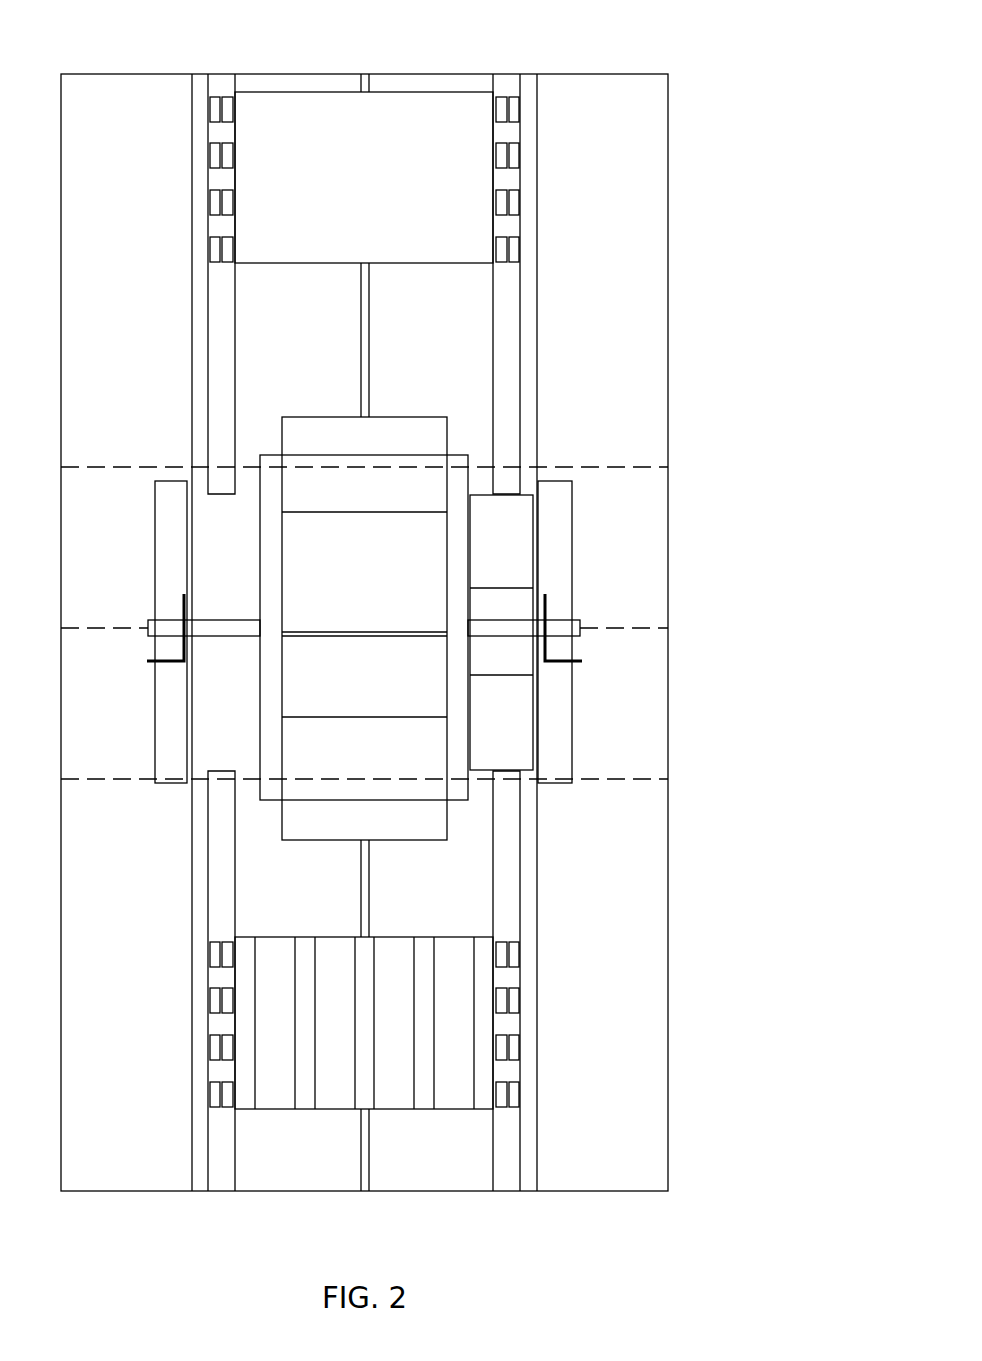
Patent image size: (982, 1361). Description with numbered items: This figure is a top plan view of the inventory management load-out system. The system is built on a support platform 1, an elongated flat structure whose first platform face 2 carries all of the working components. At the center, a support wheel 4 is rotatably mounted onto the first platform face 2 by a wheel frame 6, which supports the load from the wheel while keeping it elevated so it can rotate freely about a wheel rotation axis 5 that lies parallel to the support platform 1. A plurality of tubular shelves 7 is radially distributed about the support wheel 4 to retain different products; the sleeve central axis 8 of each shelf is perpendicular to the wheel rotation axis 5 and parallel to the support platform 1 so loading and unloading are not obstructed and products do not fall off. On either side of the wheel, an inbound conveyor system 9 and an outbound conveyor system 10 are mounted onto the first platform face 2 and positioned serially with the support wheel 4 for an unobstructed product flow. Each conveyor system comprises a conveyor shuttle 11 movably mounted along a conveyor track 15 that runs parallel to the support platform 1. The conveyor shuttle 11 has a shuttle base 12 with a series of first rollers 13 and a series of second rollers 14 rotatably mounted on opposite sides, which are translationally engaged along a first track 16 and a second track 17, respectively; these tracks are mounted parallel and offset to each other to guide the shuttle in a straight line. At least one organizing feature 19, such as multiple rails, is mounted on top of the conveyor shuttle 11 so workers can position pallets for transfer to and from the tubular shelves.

The support platform 1 is at (669, 941).
The first platform face 2 is at (660, 876).
The support wheel 4 is at (268, 663).
The wheel rotation axis 5 is at (653, 630).
The wheel frame 6 is at (155, 663).
The plurality of tubular shelves 7 is at (390, 430).
The sleeve central axis 8 is at (603, 467).
The inbound conveyor system 9 is at (152, 1024).
The outbound conveyor system 10 is at (150, 203).
The conveyor shuttle 11 is at (364, 216).
The shuttle base 12 is at (325, 252).
The series of first rollers 13 is at (500, 207).
The series of second rollers 14 is at (230, 155).
The conveyor track 15 is at (365, 635).
The first track 16 is at (507, 82).
The second track 17 is at (220, 82).
The organizing feature 19 is at (367, 1097).